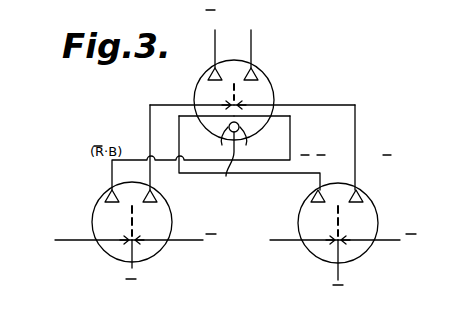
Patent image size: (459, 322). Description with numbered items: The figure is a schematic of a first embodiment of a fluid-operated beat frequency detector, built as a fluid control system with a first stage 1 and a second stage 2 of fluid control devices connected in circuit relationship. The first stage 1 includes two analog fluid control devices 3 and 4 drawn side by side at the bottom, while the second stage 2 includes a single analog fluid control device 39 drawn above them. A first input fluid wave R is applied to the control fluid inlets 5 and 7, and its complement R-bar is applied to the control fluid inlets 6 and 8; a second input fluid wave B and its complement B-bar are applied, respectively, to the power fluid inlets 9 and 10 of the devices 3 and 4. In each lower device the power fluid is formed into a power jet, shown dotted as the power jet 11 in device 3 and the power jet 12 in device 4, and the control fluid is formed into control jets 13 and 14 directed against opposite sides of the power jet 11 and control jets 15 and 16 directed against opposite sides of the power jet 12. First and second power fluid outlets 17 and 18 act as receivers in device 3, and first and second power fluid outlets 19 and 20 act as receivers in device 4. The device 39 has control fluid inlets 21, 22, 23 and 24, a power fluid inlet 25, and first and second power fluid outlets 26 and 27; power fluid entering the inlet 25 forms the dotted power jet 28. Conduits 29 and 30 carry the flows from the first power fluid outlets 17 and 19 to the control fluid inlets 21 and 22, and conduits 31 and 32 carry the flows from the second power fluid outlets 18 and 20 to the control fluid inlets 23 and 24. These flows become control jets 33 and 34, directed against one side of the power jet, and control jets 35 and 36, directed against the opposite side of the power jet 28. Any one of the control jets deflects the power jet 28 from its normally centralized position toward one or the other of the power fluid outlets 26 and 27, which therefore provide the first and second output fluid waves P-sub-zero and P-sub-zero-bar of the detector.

The first stage 1 is at (173, 222).
The second stage 2 is at (336, 97).
The analog fluid control device 3 is at (96, 206).
The analog fluid control device 4 is at (393, 217).
The control fluid inlet 5 is at (80, 242).
The control fluid inlet 6 is at (177, 243).
The control fluid inlet 7 is at (295, 242).
The control fluid inlet 8 is at (386, 243).
The power fluid inlet 9 is at (134, 267).
The power fluid inlet 10 is at (340, 266).
The power jet 11 is at (136, 215).
The power jet 12 is at (341, 215).
The control jet 13 is at (126, 237).
The control jet 14 is at (147, 226).
The control jet 15 is at (331, 238).
The control jet 16 is at (351, 233).
The first power fluid outlet 17 is at (153, 197).
The second power fluid outlet 18 is at (109, 193).
The first power fluid outlet 19 is at (313, 195).
The second power fluid outlet 20 is at (362, 196).
The control fluid inlet 21 is at (190, 104).
The control fluid inlet 22 is at (206, 126).
The control fluid inlet 23 is at (262, 126).
The control fluid inlet 24 is at (276, 107).
The power fluid inlet 25 is at (226, 159).
The first power fluid outlet 26 is at (258, 73).
The second power fluid outlet 27 is at (211, 73).
The power jet 28 is at (236, 86).
The conduit 29 is at (148, 113).
The conduit 30 is at (178, 124).
The conduit 31 is at (291, 128).
The conduit 32 is at (357, 114).
The control jet 33 is at (228, 104).
The control jet 34 is at (221, 144).
The control jet 35 is at (244, 104).
The control jet 36 is at (247, 145).
The analog fluid control device 39 is at (272, 95).